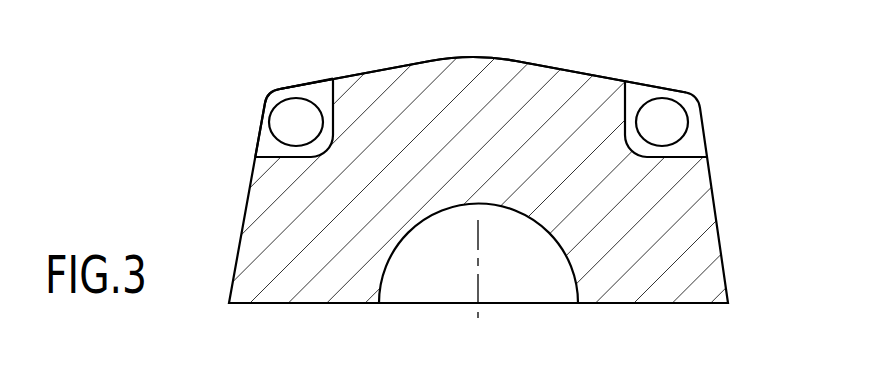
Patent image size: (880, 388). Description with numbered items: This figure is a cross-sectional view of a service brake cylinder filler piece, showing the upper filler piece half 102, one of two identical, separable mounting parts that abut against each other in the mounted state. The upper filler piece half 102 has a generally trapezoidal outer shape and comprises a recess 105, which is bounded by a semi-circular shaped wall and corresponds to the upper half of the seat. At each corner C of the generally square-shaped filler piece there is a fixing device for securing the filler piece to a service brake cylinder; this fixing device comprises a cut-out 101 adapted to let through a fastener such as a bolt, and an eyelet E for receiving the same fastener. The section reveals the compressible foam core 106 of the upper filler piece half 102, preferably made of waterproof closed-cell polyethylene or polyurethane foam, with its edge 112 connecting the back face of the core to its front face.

The cut-out 101 is at (268, 145).
The upper filler piece half 102 is at (735, 141).
The recess 105 is at (517, 275).
The foam core 106 is at (421, 106).
The edge 112 is at (487, 53).
The corner C is at (282, 90).
The eyelet E is at (664, 123).